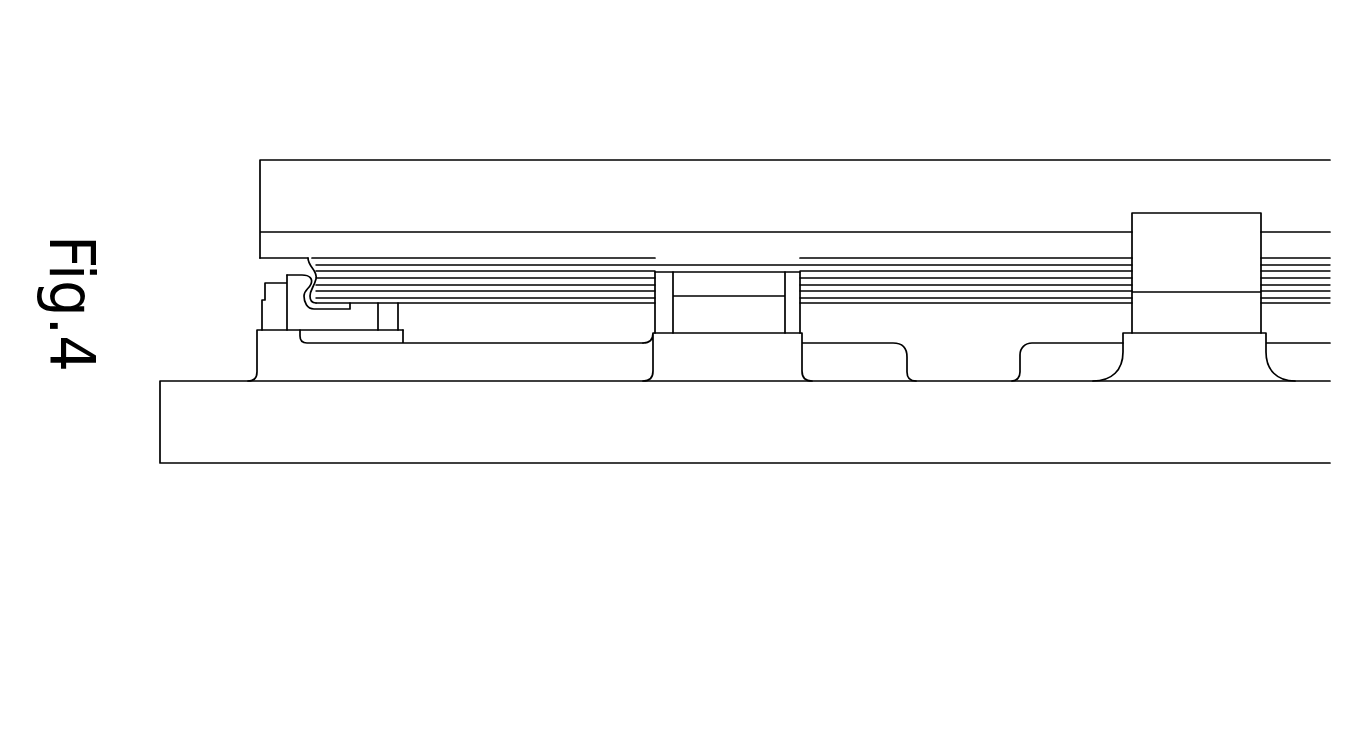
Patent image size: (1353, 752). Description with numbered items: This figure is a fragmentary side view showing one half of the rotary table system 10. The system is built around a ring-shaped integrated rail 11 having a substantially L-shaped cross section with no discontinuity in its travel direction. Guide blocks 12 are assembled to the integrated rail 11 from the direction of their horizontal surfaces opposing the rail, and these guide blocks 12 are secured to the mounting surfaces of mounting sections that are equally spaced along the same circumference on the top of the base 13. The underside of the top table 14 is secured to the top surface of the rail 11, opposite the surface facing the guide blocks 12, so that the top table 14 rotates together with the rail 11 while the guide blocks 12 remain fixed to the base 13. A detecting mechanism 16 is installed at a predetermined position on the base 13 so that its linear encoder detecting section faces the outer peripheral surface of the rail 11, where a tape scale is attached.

The rotary table system 10 is at (715, 140).
The integrated rail 11 is at (794, 252).
The guide blocks 12 is at (298, 312).
The base 13 is at (972, 452).
The top table 14 is at (978, 172).
The detecting mechanism 16 is at (1243, 227).